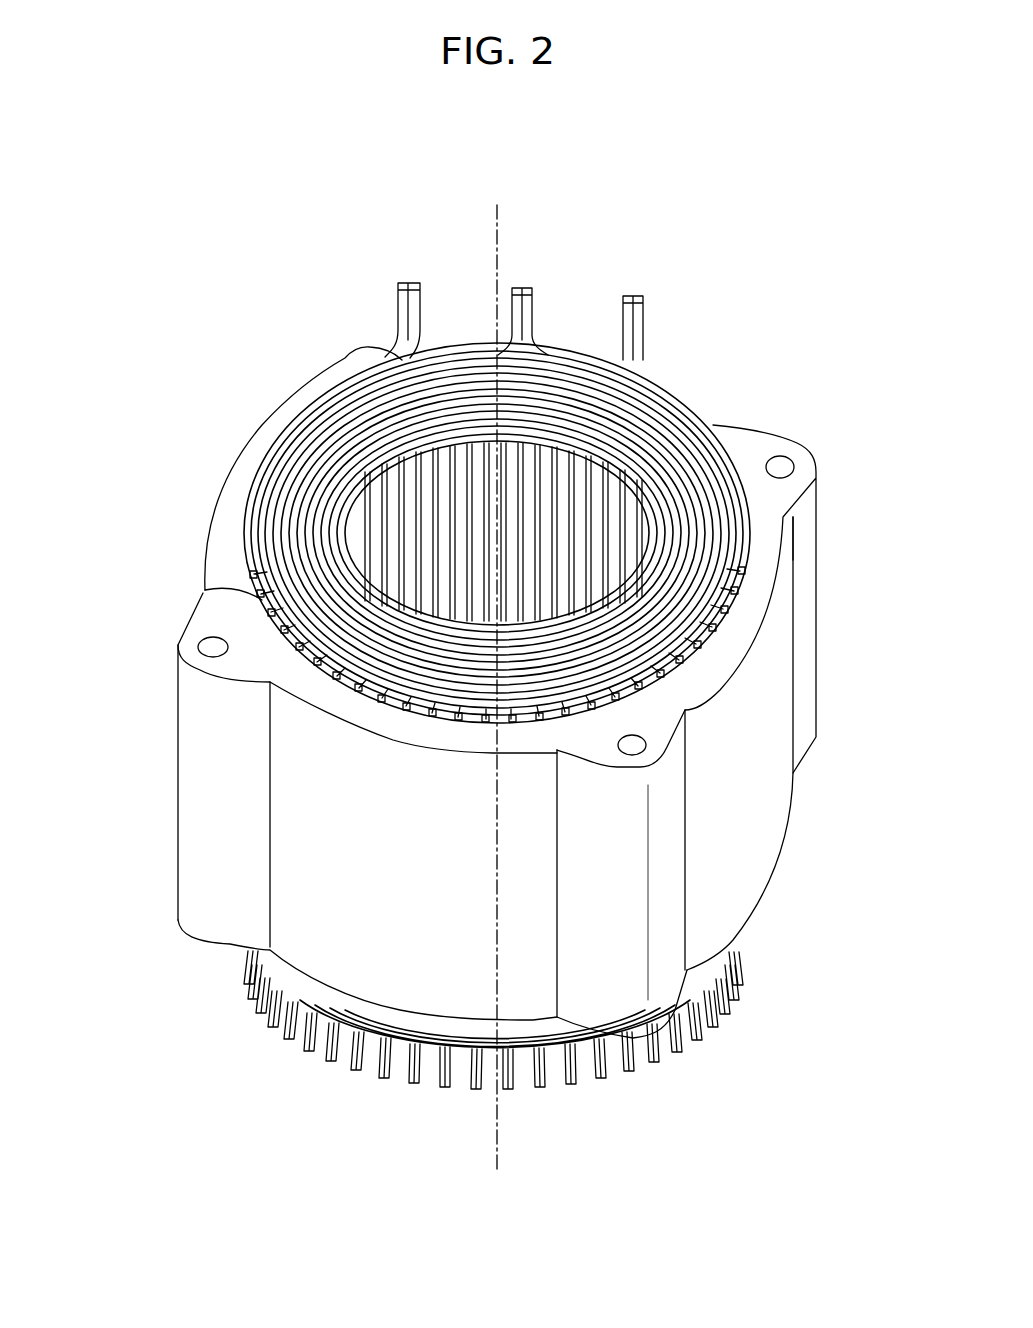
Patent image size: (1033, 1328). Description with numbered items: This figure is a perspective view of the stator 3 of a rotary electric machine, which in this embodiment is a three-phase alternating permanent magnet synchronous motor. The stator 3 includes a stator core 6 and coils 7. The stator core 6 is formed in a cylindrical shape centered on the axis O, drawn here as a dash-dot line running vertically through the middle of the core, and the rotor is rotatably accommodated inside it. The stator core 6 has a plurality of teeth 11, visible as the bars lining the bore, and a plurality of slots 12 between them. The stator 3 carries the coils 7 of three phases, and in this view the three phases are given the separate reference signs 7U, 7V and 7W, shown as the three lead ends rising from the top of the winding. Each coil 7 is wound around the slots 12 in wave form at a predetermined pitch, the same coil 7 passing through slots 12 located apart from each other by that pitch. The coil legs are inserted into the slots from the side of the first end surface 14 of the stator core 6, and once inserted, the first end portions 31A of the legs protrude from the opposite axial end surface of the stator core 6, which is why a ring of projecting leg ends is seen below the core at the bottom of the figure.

The stator 3 is at (775, 277).
The axis O is at (497, 231).
The stator core 6 is at (793, 798).
The slots 12 is at (212, 580).
The first end surface 14 is at (772, 547).
The coil 7 is at (518, 259).
The W-phase coil 7W is at (402, 283).
The U-phase coil 7U is at (520, 288).
The V-phase coil 7V is at (631, 297).
The teeth 11 is at (563, 503).
The first end portions 31A is at (355, 1072).